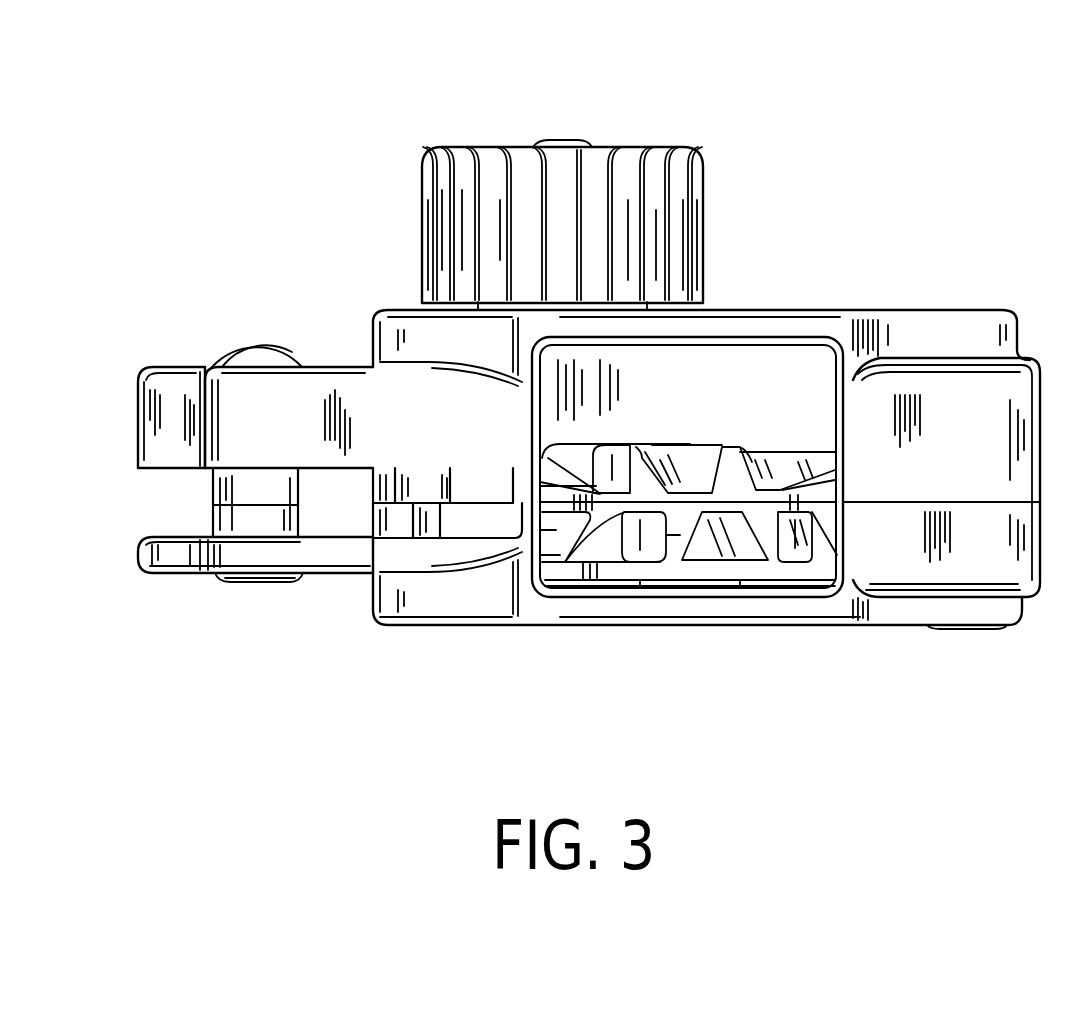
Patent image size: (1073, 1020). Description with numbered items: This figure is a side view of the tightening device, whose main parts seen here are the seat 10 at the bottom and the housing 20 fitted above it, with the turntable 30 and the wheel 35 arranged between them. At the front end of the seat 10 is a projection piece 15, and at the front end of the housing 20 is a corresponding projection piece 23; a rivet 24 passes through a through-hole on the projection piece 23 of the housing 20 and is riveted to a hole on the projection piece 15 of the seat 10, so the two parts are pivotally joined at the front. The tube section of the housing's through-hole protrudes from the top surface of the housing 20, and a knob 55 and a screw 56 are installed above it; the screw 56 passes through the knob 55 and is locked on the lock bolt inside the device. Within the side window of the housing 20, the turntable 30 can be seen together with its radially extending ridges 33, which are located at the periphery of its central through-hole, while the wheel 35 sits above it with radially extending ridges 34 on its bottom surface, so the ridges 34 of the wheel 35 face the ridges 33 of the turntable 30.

The seat 10 is at (987, 562).
The projection piece 15 is at (178, 560).
The housing 20 is at (935, 330).
The projection piece 23 is at (175, 388).
The rivet 24 is at (272, 358).
The turntable 30 is at (768, 573).
The ridges 33 is at (658, 540).
The ridges 34 is at (705, 455).
The wheel 35 is at (795, 385).
The knob 55 is at (655, 147).
The screw 56 is at (558, 140).